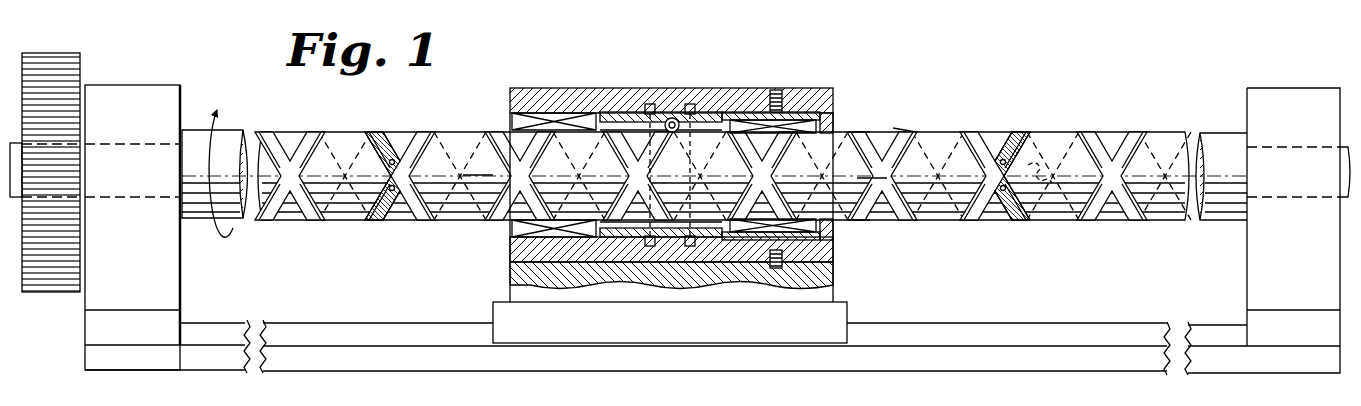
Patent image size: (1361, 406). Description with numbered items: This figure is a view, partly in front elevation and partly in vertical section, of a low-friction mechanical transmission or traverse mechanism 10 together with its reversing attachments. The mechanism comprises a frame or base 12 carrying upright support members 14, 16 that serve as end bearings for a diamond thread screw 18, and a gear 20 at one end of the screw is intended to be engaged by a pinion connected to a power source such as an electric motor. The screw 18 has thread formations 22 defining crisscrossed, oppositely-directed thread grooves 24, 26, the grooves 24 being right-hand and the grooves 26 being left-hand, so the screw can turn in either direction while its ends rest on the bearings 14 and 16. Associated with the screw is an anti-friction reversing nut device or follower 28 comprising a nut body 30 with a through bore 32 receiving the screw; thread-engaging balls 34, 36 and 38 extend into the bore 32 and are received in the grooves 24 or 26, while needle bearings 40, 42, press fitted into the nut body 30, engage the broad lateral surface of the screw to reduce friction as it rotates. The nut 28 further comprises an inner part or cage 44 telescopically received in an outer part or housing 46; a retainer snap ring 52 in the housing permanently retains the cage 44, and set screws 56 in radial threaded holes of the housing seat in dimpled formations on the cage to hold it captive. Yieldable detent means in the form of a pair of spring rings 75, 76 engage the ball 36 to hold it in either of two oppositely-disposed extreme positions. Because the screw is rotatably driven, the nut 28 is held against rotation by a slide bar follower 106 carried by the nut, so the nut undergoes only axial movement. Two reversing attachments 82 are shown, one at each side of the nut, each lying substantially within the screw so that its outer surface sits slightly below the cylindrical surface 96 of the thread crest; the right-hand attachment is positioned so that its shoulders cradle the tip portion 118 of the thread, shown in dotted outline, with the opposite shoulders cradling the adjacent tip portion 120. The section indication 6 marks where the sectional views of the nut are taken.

The section line 6- 6 is at (471, 182).
The traverse mechanism 10 is at (716, 167).
The base 12 is at (950, 366).
The upright support member 14 is at (157, 273).
The upright support member 16 is at (1280, 253).
The diamond thread screw 18 is at (723, 177).
The gear 20 is at (55, 286).
The thread formations 22 is at (1107, 151).
The right-hand thread grooves 24 is at (995, 185).
The left-hand thread grooves 26 is at (990, 207).
The reversing nut device 28 is at (657, 182).
The nut body 30 is at (657, 215).
The through bore 32 is at (840, 124).
The ball 34 is at (672, 117).
The ball 36 is at (640, 112).
The ball 38 is at (724, 110).
The needle bearing 40 is at (520, 118).
The needle bearing 42 is at (804, 127).
The cage 44 is at (745, 243).
The housing 46 is at (803, 253).
The retainer snap ring 52 is at (836, 98).
The set screws 56 is at (776, 92).
The spring ring 75 is at (650, 104).
The spring ring 76 is at (692, 110).
The reversing attachment 82 is at (380, 130).
The cylindrical surface of the thread crest 96 is at (893, 128).
The slide bar follower 106 is at (512, 313).
The tip portion of the thread 118 is at (1120, 103).
The tip portion of the thread 120 is at (1032, 203).